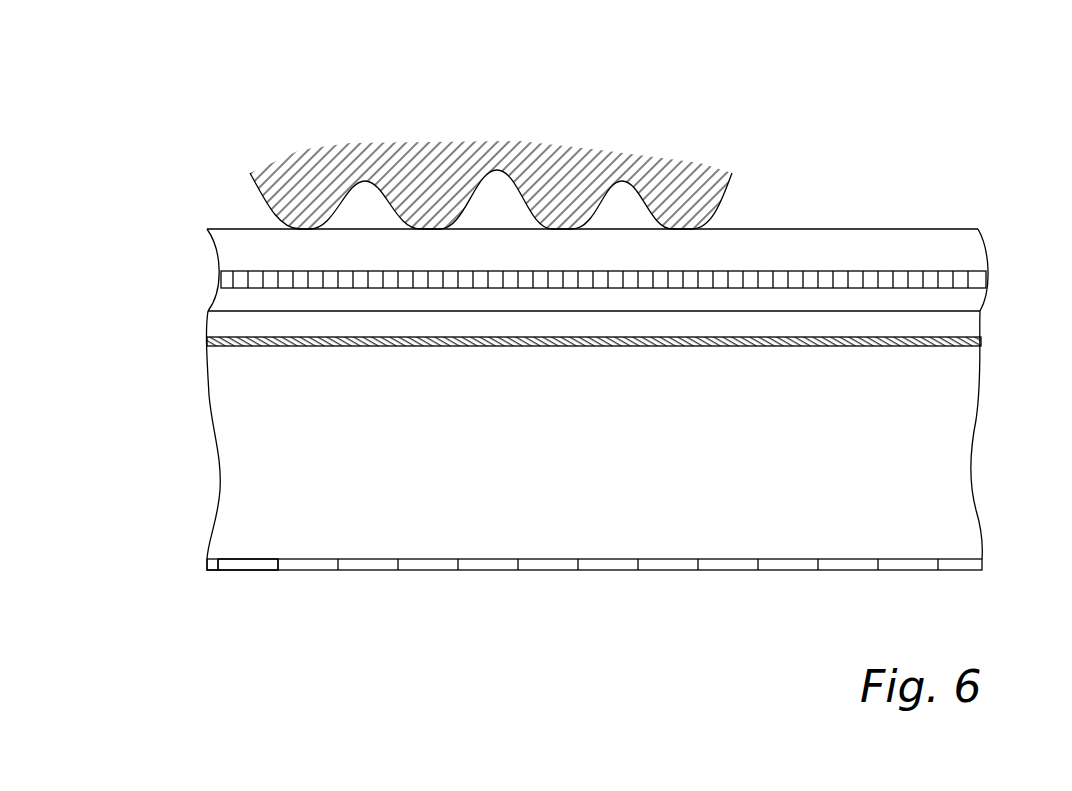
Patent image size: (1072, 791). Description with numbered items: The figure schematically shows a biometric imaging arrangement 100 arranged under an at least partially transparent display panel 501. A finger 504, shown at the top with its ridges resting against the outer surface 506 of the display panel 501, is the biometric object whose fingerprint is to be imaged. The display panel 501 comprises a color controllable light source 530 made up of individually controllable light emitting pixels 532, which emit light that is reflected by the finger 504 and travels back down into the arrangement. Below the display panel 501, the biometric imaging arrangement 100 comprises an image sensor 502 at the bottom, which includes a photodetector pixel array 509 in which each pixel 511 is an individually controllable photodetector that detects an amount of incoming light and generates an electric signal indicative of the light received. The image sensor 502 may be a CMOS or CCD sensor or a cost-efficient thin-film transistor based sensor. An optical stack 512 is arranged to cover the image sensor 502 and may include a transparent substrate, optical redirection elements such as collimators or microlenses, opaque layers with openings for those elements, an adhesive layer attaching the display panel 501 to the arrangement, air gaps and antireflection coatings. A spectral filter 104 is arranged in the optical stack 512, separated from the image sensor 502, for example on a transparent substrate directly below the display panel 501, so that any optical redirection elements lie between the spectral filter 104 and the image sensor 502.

The finger 504 is at (554, 168).
The outer surface 506 is at (778, 228).
The transparent display panel 501 is at (208, 240).
The light emitting pixels 532 is at (900, 278).
The color controllable light source 530 is at (986, 279).
The spectral filter 104 is at (984, 343).
The biometric imaging arrangement 100 is at (185, 312).
The optical stack 512 is at (985, 312).
The photodetector pixel array 509 is at (243, 559).
The pixel 511 is at (256, 572).
The image sensor 502 is at (207, 567).